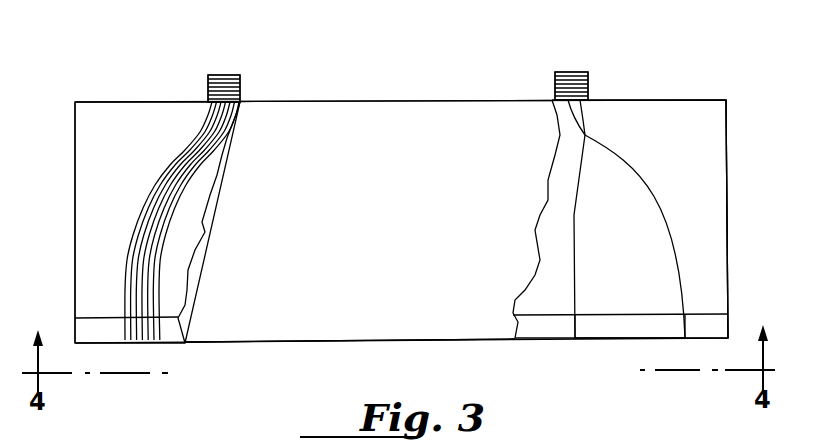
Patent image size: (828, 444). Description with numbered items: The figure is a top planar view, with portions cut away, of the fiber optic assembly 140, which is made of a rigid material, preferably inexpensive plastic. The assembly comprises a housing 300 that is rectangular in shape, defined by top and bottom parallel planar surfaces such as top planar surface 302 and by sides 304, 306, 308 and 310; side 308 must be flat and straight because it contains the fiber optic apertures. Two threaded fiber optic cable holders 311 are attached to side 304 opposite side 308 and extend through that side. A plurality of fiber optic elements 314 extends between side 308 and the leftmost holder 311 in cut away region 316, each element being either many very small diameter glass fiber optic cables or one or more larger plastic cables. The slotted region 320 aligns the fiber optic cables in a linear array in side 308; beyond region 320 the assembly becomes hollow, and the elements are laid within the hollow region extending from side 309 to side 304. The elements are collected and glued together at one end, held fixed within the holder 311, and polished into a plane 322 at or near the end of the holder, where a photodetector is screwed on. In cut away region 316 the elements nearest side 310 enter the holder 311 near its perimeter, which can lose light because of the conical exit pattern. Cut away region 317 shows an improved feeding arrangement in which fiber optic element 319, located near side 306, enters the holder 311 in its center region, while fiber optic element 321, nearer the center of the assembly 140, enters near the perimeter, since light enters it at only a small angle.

The fiber optic assembly 140 is at (285, 350).
The housing 300 is at (368, 100).
The top planar surface 302 is at (380, 120).
The side 304 is at (343, 100).
The side 306 is at (728, 197).
The side 308 is at (475, 340).
The side 309 is at (93, 315).
The side 310 is at (75, 230).
The threaded fiber optic cable holder 311 is at (210, 83).
The fiber optic elements 314 is at (138, 199).
The cut away region 316 is at (102, 127).
The cut away region 317 is at (705, 153).
The fiber optic element 319 is at (672, 242).
The slotted region 320 is at (613, 325).
The fiber optic element 321 is at (575, 225).
The plane 322 is at (222, 74).